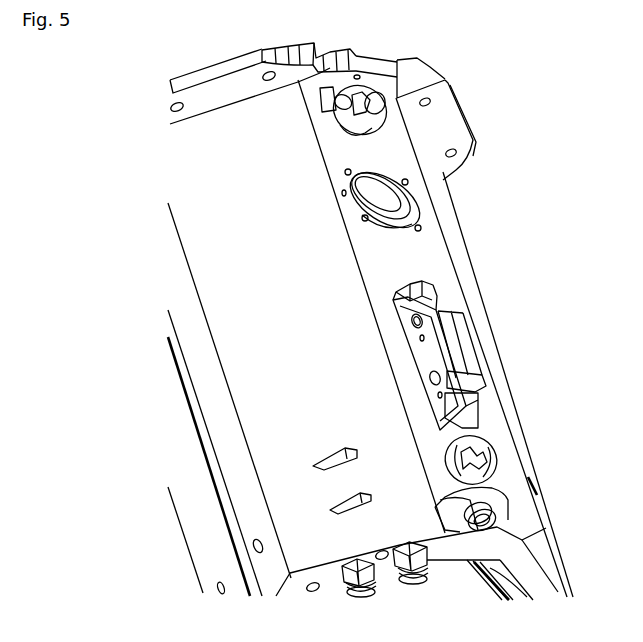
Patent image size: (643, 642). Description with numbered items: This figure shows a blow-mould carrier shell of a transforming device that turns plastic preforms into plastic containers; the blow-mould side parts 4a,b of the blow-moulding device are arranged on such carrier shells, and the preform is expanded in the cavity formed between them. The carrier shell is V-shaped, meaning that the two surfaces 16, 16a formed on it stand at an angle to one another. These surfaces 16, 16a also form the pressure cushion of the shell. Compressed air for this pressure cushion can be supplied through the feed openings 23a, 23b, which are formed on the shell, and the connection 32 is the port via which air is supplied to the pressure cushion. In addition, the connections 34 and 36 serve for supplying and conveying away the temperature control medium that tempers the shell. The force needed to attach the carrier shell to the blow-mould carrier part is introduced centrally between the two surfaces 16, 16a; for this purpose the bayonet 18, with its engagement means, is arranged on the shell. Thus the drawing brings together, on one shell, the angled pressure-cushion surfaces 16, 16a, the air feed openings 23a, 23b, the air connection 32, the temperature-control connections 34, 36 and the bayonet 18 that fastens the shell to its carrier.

The surface 16 is at (262, 329).
The surface 16a is at (509, 424).
The bayonet 18 is at (378, 100).
The blow-mould side parts 4a,b is at (498, 189).
The feed opening 23a is at (345, 508).
The feed opening 23b is at (318, 461).
The connection 32 is at (483, 508).
The connection 34 is at (421, 589).
The connection 36 is at (362, 590).